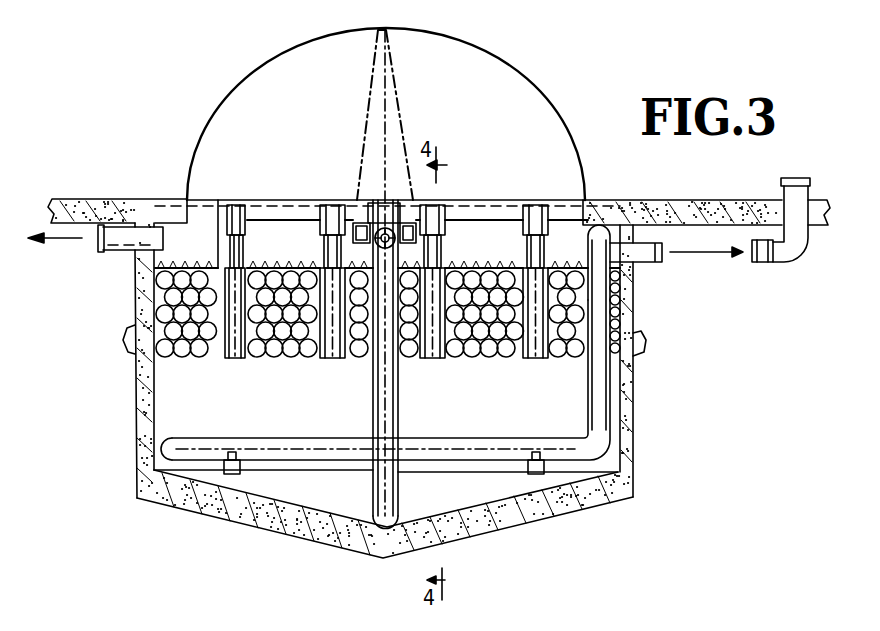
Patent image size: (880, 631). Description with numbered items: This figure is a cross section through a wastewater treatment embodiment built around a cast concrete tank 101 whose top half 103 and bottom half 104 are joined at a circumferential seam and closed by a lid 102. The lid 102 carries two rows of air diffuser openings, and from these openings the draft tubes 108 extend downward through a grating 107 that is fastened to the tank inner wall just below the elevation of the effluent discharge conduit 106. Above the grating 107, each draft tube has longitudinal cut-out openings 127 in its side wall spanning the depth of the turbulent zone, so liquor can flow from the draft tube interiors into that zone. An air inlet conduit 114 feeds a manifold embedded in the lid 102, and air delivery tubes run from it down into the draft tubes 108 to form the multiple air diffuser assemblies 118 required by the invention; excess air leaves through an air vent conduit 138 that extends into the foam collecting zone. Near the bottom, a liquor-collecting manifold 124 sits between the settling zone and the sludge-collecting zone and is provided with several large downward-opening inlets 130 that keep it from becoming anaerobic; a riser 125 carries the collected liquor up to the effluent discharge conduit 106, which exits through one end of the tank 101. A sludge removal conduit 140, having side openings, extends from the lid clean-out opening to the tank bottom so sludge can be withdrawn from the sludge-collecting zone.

The cast concrete tank 101 is at (652, 359).
The lid 102 is at (591, 208).
The top half 103 is at (637, 304).
The bottom half 104 is at (638, 422).
The effluent discharge conduit 106 is at (667, 263).
The grating 107 is at (481, 267).
The draft tubes 108 is at (322, 364).
The air inlet conduit 114 is at (671, 199).
The air diffuser assemblies 118 is at (280, 425).
The liquor-collecting manifold 124 is at (186, 439).
The riser 125 is at (588, 416).
The longitudinal cut-out openings 127 is at (260, 248).
The downward-opening inlets 130 is at (240, 473).
The air vent conduit 138 is at (100, 253).
The sludge removal conduit 140 is at (400, 432).